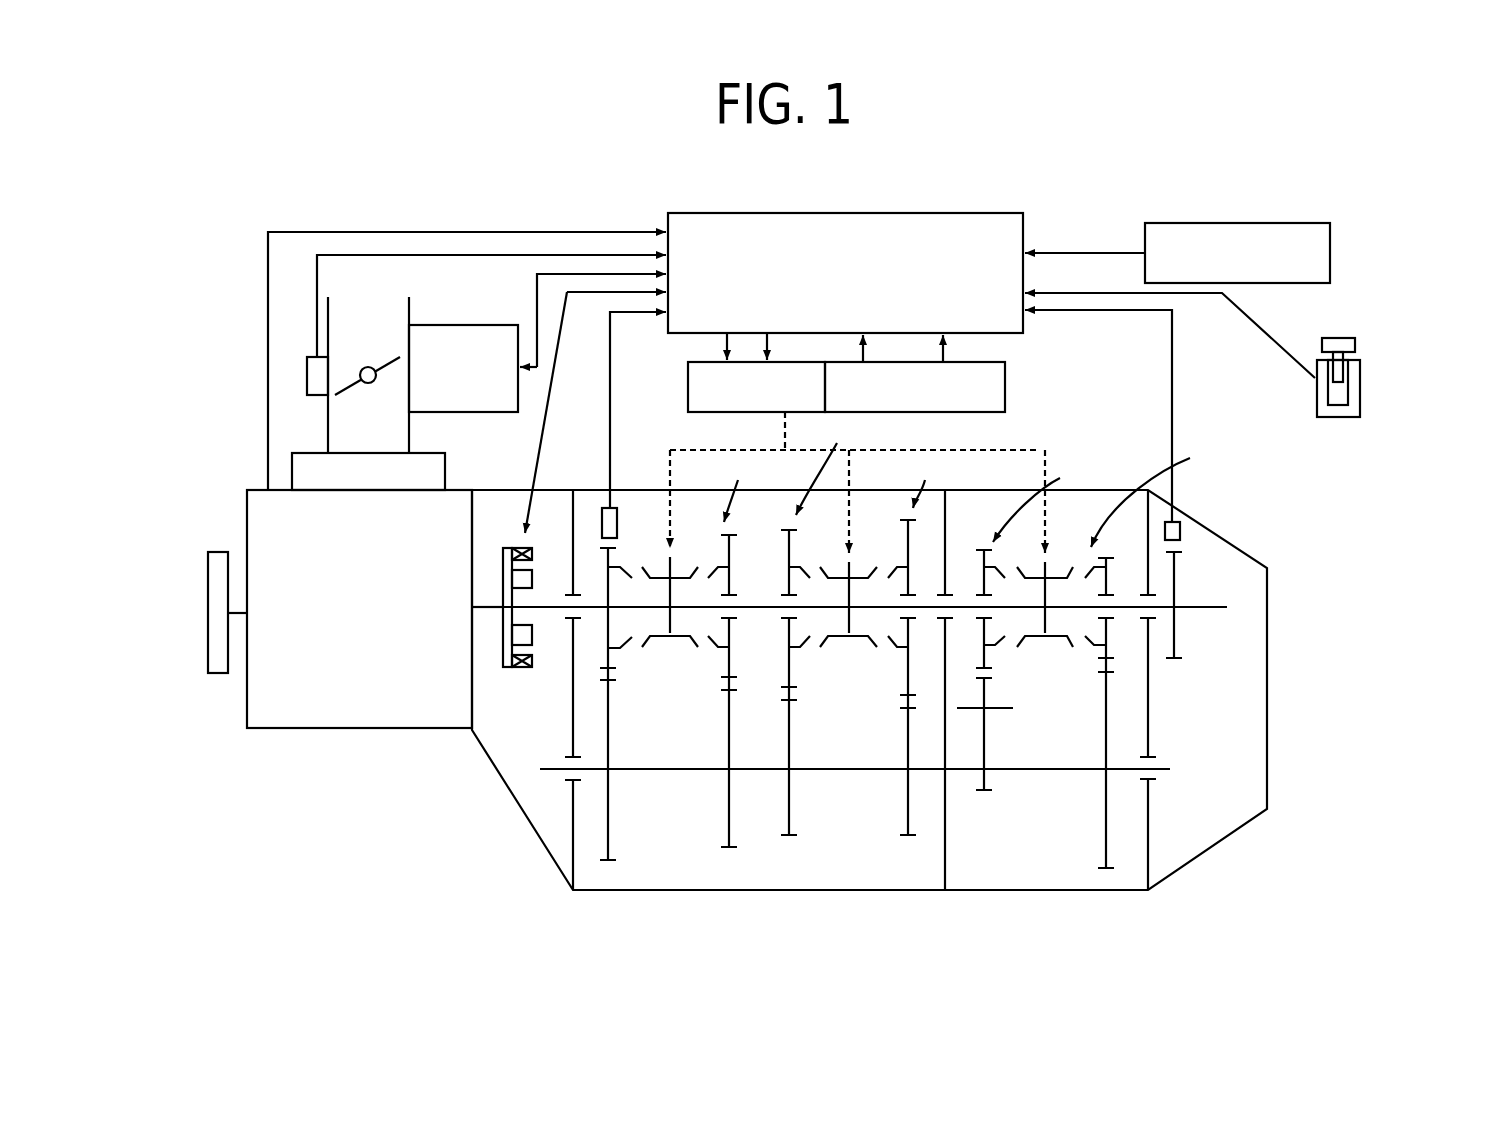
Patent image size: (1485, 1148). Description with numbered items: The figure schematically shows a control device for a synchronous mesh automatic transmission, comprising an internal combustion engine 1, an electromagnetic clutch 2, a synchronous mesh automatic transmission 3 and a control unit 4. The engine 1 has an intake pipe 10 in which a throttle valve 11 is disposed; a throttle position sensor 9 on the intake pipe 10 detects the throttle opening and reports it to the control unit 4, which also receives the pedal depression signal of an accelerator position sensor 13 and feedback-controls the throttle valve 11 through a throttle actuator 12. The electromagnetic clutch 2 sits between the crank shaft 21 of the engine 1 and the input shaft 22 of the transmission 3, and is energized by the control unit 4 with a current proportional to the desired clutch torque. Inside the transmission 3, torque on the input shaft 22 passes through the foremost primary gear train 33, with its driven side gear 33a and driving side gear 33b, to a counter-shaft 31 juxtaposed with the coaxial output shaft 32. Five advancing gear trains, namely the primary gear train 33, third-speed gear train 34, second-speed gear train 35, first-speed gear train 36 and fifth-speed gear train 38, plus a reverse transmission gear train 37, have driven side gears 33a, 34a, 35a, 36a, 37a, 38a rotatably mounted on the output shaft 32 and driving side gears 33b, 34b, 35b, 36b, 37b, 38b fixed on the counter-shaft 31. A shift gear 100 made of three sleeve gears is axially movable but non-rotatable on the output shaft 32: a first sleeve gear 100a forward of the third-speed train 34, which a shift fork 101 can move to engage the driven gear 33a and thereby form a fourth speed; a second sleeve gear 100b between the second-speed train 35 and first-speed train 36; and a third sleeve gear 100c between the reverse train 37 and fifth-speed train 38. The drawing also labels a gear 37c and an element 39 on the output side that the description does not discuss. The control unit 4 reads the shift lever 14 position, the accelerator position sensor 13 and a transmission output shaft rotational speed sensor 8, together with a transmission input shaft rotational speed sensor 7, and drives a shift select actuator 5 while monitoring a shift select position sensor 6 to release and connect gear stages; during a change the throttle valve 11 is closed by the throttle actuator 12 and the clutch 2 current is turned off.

The internal combustion engine 1 is at (340, 732).
The electromagnetic clutch 2 is at (518, 673).
The synchronous mesh automatic transmission 3 is at (952, 684).
The control unit 4 is at (870, 213).
The shift select actuator 5 is at (681, 376).
The shift select position sensor 6 is at (1013, 397).
The transmission input shaft rotational speed sensor 7 is at (603, 507).
The transmission output shaft rotational speed sensor 8 is at (1178, 521).
The throttle position sensor 9 is at (312, 356).
The intake pipe 10 is at (411, 304).
The throttle valve 11 is at (347, 395).
The throttle actuator 12 is at (483, 325).
The accelerator position sensor 13 is at (1237, 223).
The shift lever 14 is at (1316, 400).
The crank shaft 21 is at (484, 605).
The input shaft 22 is at (550, 605).
The counter-shaft 31 is at (662, 772).
The output shaft 32 is at (1196, 606).
The primary gear train 33 is at (587, 734).
The driven side gear of primary gear train 33a is at (611, 557).
The driving side gear of primary gear train 33b is at (612, 723).
The third-speed gear train 34 is at (747, 669).
The driven side gear of third-speed gear train 34a is at (731, 555).
The driving side gear of third-speed gear train 34b is at (733, 740).
The second-speed gear train 35 is at (822, 663).
The driven side gear of second-speed gear train 35a is at (791, 556).
The driving side gear of second-speed gear train 35b is at (792, 739).
The first-speed gear train 36 is at (882, 663).
The driven side gear of first-speed gear train 36a is at (910, 556).
The driving side gear of first-speed gear train 36b is at (907, 712).
The reverse transmission gear train 37 is at (1003, 660).
The driven side gear of reverse transmission gear train 37a is at (983, 566).
The driving side gear of reverse transmission gear train 37b is at (987, 720).
The reverse driven gear 37c is at (988, 784).
The fifth-speed gear train 38 is at (1125, 692).
The driven side gear of fifth-speed gear train 38a is at (1113, 568).
The driving side gear of fifth-speed gear train 38b is at (1108, 714).
The output gear 39 is at (1175, 632).
The shift gear 100 is at (857, 641).
The first sleeve gear 100a is at (665, 638).
The second sleeve gear 100b is at (863, 637).
The third sleeve gear 100c is at (1035, 637).
The shift fork 101 is at (1030, 450).